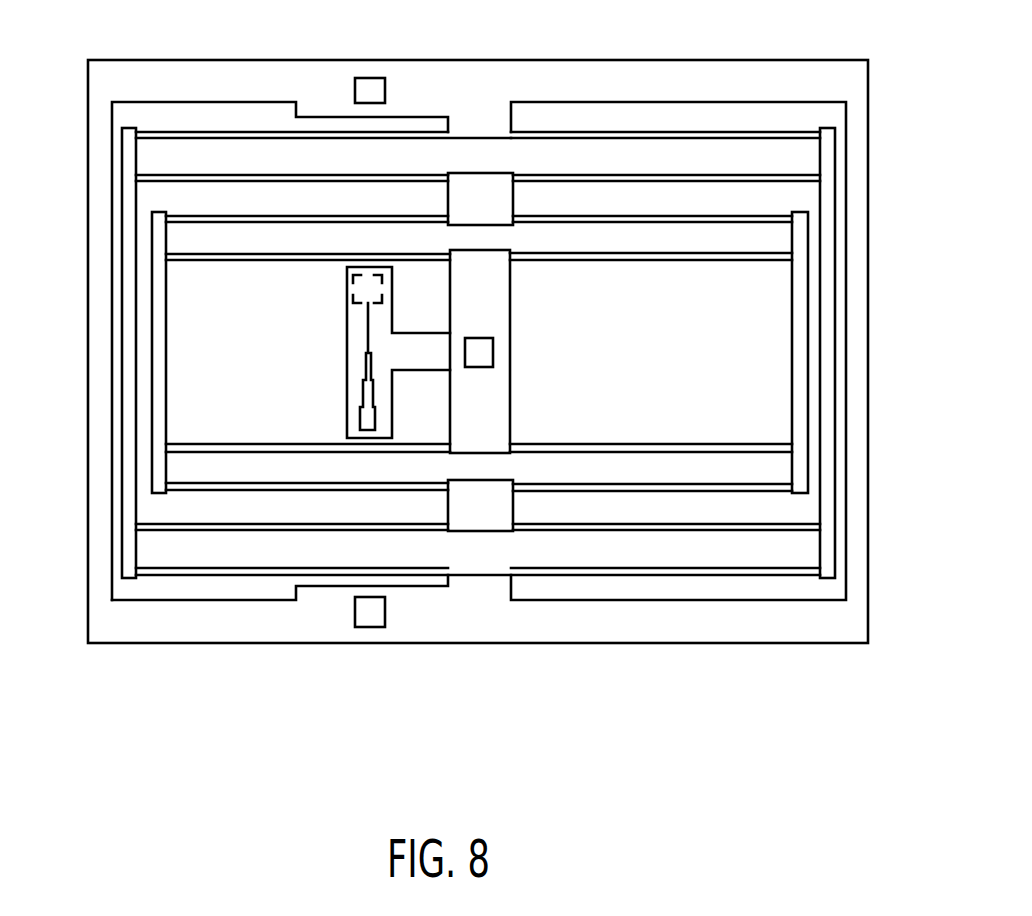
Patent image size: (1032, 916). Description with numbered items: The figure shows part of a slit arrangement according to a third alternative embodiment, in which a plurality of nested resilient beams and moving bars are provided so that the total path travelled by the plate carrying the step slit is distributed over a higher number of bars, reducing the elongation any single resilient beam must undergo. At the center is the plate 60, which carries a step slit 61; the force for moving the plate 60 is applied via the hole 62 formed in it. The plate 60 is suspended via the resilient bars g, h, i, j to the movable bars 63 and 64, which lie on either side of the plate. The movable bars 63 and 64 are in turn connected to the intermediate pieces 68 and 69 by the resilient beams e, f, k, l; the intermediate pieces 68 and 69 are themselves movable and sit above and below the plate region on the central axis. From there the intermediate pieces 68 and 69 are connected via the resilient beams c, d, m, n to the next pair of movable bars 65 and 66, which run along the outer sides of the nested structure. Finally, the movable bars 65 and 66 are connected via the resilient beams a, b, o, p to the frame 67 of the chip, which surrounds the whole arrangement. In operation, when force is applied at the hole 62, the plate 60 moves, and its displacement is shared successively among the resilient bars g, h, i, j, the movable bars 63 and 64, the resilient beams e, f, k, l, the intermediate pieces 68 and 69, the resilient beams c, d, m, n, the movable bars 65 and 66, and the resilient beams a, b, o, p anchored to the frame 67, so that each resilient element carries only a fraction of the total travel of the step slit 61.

The plate 60 is at (470, 278).
The step slit 61 is at (364, 395).
The hole 62 is at (482, 353).
The movable bar 63 is at (160, 313).
The movable bar 64 is at (797, 322).
The movable bar 65 is at (830, 318).
The movable bar 66 is at (130, 386).
The frame 67 is at (110, 136).
The intermediate piece 68 is at (483, 525).
The intermediate piece 69 is at (483, 187).
The resilient beam a is at (236, 139).
The resilient beam b is at (660, 138).
The resilient beam c is at (290, 183).
The resilient beam d is at (718, 183).
The resilient beam e is at (340, 225).
The resilient beam f is at (768, 223).
The resilient bar g is at (295, 262).
The resilient bar h is at (720, 262).
The resilient bar i is at (235, 454).
The resilient bar j is at (673, 454).
The resilient beam k is at (285, 492).
The resilient beam l is at (730, 491).
The resilient beam m is at (350, 532).
The resilient beam n is at (775, 532).
The resilient beam o is at (282, 577).
The resilient beam p is at (727, 576).